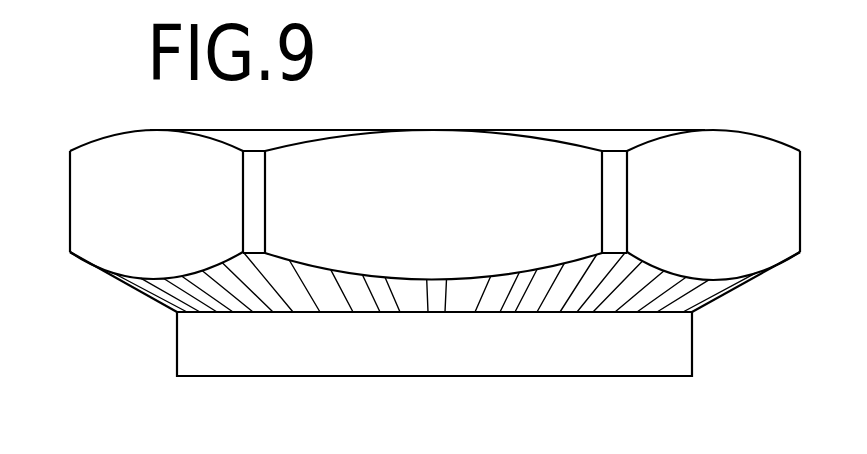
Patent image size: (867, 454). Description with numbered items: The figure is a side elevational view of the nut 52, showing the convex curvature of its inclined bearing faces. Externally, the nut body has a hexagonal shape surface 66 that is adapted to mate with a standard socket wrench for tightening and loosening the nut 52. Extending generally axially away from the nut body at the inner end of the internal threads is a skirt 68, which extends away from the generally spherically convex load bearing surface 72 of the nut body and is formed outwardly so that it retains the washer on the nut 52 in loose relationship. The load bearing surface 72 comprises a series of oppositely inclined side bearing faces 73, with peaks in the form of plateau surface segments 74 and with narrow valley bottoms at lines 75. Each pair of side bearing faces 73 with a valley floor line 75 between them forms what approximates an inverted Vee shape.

The nut 52 is at (450, 148).
The hexagonal shape surface 66 is at (68, 175).
The skirt 68 is at (291, 362).
The spherically convex load bearing surface 72 is at (430, 315).
The side bearing faces 73 is at (313, 264).
The plateau surface segments 74 is at (340, 282).
The valley bottom lines 75 is at (400, 278).